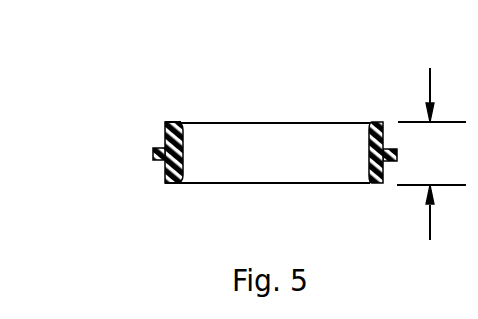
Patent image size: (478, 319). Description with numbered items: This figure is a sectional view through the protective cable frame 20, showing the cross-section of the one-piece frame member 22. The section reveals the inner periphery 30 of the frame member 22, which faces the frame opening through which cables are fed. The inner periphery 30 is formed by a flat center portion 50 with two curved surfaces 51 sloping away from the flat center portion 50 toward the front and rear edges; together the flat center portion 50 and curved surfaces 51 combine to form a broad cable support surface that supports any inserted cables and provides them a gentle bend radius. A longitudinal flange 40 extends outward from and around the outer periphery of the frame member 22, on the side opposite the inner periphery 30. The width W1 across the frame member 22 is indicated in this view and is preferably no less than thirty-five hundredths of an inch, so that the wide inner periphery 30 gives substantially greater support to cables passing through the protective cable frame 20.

The protective cable frame 20 is at (122, 108).
The frame member 22 is at (165, 178).
The inner periphery 30 is at (318, 150).
The longitudinal flange 40 is at (154, 152).
The flat center portion 50 is at (182, 150).
The curved surfaces 51 is at (173, 124).
The width across the frame member W1 is at (431, 166).